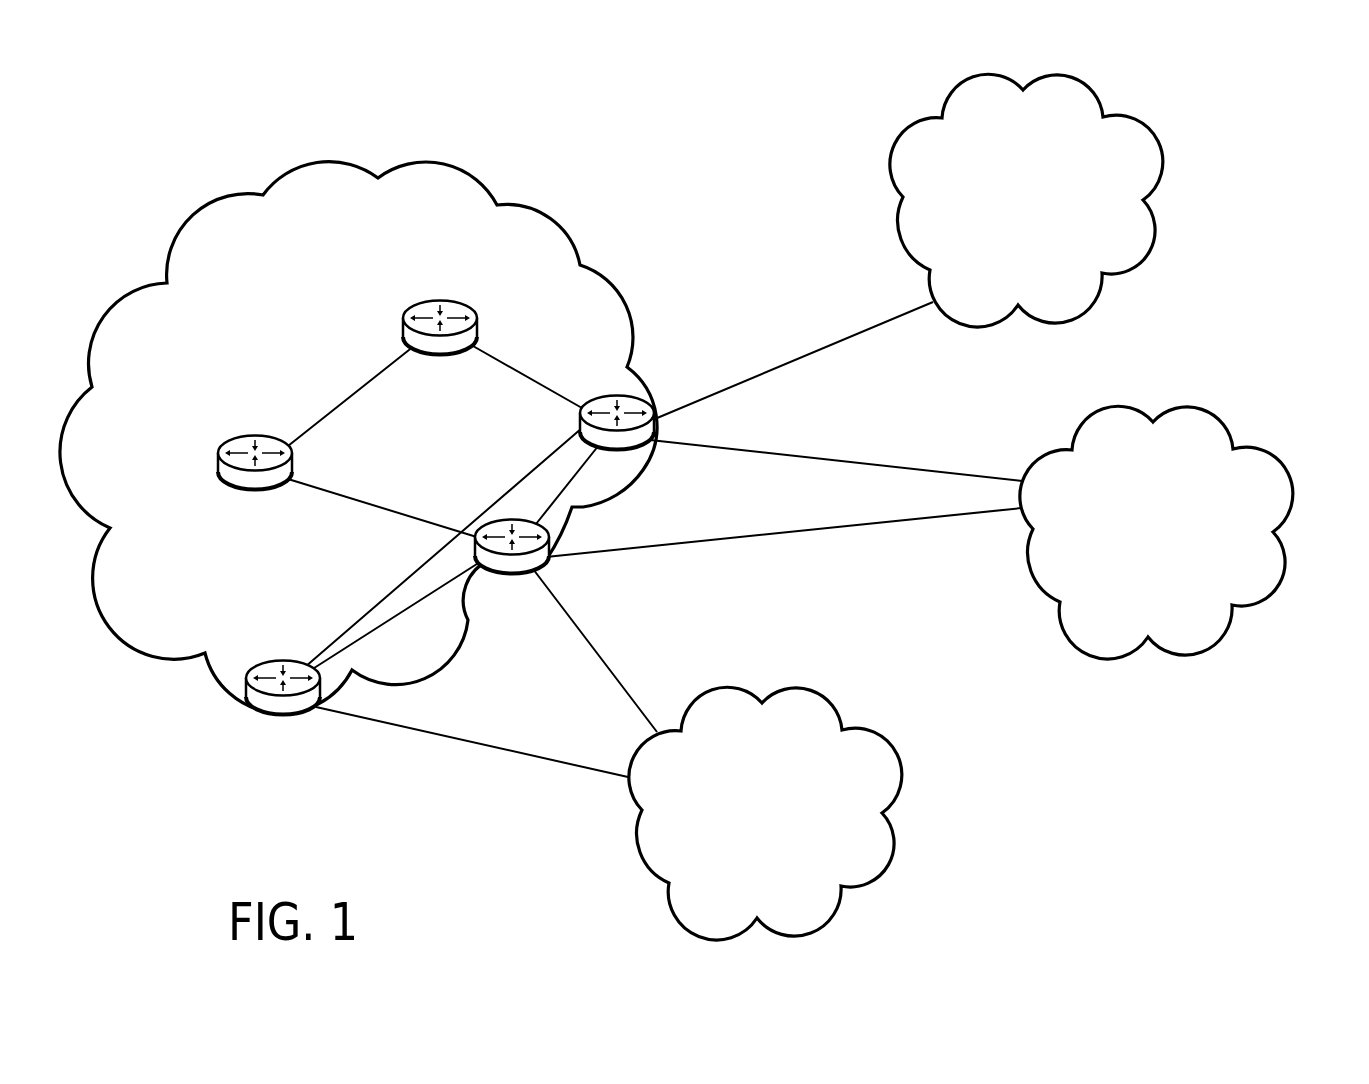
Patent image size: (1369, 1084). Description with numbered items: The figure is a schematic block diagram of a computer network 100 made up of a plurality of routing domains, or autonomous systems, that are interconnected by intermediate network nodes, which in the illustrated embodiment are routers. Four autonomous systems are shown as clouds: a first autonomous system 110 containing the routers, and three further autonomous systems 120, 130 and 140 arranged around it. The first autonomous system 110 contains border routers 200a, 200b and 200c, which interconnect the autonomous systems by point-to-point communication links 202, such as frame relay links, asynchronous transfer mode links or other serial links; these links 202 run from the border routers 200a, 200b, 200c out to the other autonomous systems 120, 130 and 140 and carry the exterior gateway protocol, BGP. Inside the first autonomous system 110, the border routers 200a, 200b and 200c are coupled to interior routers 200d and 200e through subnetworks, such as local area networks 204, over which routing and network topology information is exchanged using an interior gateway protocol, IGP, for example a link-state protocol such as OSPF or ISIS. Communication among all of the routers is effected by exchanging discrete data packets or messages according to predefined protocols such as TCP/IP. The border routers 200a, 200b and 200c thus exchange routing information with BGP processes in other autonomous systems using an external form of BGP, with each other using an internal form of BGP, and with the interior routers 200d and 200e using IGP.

The computer network 100 is at (1245, 127).
The autonomous system AS1 110 is at (279, 307).
The autonomous system AS2 120 is at (1053, 221).
The autonomous system AS3 130 is at (1168, 561).
The autonomous system AS4 140 is at (781, 824).
The border router 200a is at (523, 566).
The border router 200b is at (257, 663).
The border router 200c is at (597, 394).
The router 200d is at (440, 300).
The router 200e is at (252, 435).
The point-to-point communication links 202 is at (513, 751).
The local area networks 204 is at (355, 394).